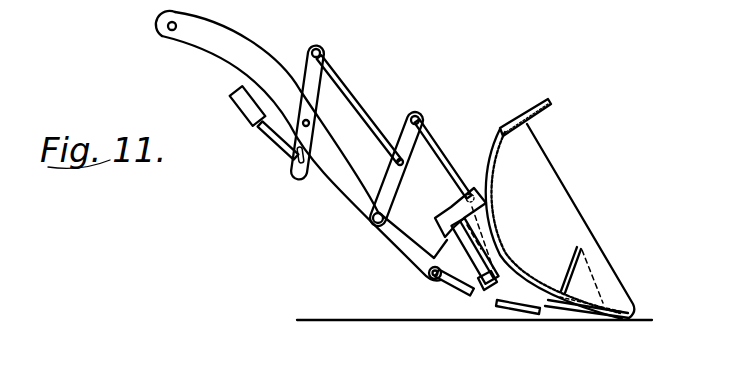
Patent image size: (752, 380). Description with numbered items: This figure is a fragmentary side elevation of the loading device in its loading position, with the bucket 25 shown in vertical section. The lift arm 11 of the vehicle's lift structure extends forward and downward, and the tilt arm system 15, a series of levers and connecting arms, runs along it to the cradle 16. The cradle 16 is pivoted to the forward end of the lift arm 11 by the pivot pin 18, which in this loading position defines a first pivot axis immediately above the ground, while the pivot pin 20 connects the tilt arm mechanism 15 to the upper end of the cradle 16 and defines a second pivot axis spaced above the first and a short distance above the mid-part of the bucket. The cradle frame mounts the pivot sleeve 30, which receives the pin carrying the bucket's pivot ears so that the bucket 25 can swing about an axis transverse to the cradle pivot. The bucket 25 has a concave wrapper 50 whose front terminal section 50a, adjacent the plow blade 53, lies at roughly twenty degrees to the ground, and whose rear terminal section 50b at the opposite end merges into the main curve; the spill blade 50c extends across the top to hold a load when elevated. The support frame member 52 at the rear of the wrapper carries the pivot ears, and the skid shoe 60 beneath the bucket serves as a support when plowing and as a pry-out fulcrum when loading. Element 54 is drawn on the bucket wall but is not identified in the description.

The lift arm 11 is at (350, 188).
The tilt arm system 15 is at (382, 109).
The cradle 16 is at (448, 196).
The pivot pin 18 is at (428, 276).
The pivot pin 20 is at (471, 190).
The bucket 25 is at (572, 193).
The pivot sleeve 30 is at (465, 263).
The wrapper 50 is at (488, 220).
The front terminal section 50a is at (574, 303).
The rear terminal section 50b is at (503, 150).
The spill blade 50c is at (544, 103).
The support frame member 52 is at (487, 150).
The plow blade 53 is at (624, 320).
The bucket side wall 54 is at (558, 200).
The skid shoe 60 is at (513, 314).